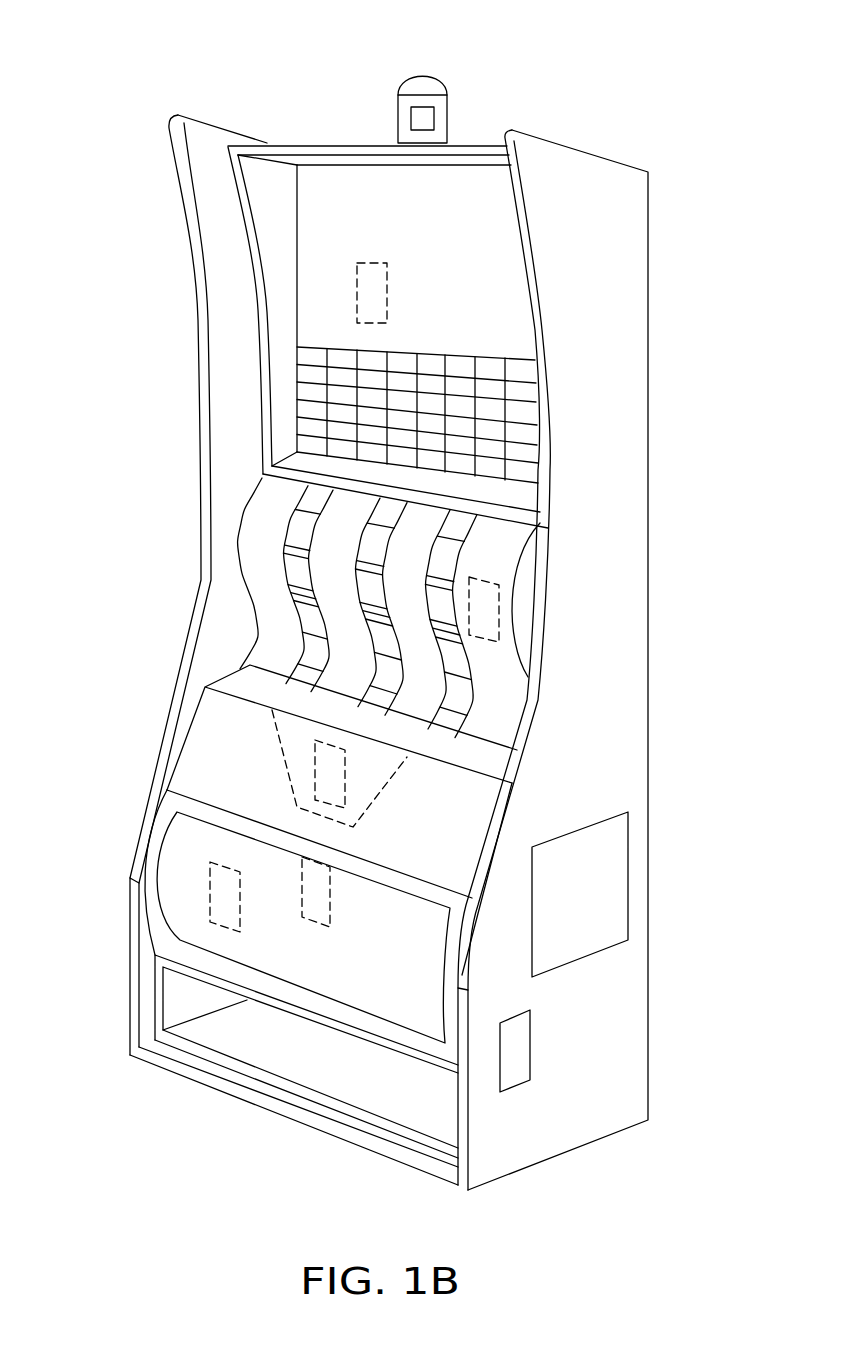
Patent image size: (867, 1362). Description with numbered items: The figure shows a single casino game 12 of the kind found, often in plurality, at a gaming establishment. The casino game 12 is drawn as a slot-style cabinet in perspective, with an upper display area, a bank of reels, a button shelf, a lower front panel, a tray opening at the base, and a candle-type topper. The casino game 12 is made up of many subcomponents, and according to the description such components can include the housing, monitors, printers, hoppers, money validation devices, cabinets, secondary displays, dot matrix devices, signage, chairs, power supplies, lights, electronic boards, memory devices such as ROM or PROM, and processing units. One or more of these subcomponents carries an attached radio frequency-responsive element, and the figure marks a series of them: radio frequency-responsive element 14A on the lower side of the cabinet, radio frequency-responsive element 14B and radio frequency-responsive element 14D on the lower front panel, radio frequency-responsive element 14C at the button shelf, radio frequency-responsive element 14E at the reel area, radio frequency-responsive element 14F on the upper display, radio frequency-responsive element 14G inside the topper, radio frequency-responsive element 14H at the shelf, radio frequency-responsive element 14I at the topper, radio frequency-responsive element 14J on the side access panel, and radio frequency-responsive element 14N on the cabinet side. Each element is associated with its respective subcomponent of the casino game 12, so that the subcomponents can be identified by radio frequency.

The casino game 12 is at (118, 76).
The radio frequency-responsive element 14A is at (513, 1048).
The radio frequency-responsive element 14B is at (217, 903).
The radio frequency-responsive element 14C is at (330, 773).
The radio frequency-responsive element 14D is at (315, 905).
The radio frequency-responsive element 14E is at (487, 612).
The radio frequency-responsive element 14F is at (357, 297).
The radio frequency-responsive element 14G is at (427, 118).
The radio frequency-responsive element 14H is at (295, 748).
The radio frequency-responsive element 14I is at (403, 81).
The radio frequency-responsive element 14J is at (608, 893).
The radio frequency-responsive element 14N is at (622, 1005).